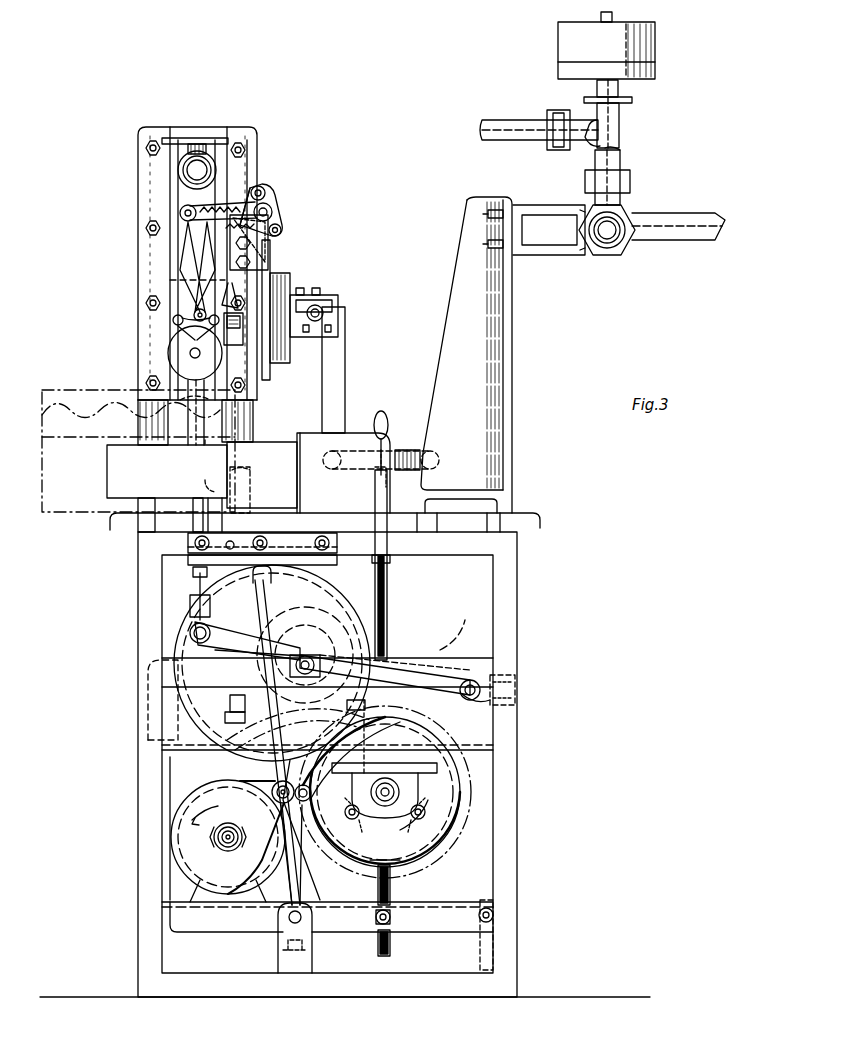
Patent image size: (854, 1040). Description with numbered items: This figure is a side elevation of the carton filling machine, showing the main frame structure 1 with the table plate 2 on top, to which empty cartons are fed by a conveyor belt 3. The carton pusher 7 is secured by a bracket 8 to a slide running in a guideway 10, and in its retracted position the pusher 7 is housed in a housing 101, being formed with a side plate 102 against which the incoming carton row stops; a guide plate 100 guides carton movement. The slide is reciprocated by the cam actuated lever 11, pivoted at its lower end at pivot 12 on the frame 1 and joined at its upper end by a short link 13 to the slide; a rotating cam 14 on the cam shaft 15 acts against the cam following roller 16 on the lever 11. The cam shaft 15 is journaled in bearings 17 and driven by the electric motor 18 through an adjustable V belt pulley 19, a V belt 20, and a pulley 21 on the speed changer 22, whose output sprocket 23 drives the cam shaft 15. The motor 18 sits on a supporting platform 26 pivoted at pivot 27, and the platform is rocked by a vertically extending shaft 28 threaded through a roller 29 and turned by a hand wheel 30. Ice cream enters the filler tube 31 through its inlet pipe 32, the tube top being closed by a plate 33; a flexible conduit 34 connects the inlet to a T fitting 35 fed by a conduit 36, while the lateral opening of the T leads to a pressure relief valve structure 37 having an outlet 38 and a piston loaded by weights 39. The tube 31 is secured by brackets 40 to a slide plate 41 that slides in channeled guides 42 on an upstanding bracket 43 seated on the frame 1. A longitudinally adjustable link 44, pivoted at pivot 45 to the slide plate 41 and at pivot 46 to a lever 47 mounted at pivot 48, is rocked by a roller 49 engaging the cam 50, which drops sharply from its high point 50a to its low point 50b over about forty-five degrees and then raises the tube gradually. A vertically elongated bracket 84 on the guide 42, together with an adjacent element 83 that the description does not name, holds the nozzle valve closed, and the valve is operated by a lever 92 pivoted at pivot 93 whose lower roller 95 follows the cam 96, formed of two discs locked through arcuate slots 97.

The main frame structure 1 is at (505, 610).
The table plate 2 is at (515, 513).
The conveyor belt 3 is at (466, 355).
The carton pusher 7 is at (220, 490).
The bracket 8 is at (252, 480).
The guideway 10 is at (330, 565).
The cam actuated lever 11 is at (255, 600).
The pivot 12 is at (290, 922).
The short link 13 is at (246, 583).
The rotating cam 14 is at (318, 810).
The cam shaft 15 is at (398, 793).
The cam following roller 16 is at (272, 782).
The bearings 17 is at (420, 780).
The electric motor 18 is at (190, 855).
The adjustable V belt pulley 19 is at (178, 832).
The V belt 20 is at (168, 775).
The pulley 21 is at (190, 608).
The speed changer 22 is at (345, 620).
The sprocket 23 is at (380, 655).
The supporting platform 26 is at (222, 930).
The pivot 27 is at (495, 912).
The vertically extending shaft 28 is at (388, 610).
The roller 29 is at (390, 922).
The hand wheel 30 is at (405, 430).
The conduit or nozzle 31 is at (185, 200).
The inlet pipe 32 is at (178, 170).
The plate 33 is at (205, 138).
The flexible conduit 34 is at (212, 170).
The T fitting 35 is at (625, 200).
The conduit 36 is at (675, 220).
The pressure relief valve structure 37 is at (625, 135).
The outlet 38 is at (505, 125).
The weights 39 is at (660, 75).
The brackets 40 is at (195, 385).
The slide plate 41 is at (225, 162).
The channeled guides 42 is at (165, 128).
The upstanding bracket 43 is at (140, 240).
The longitudinally adjustable link 44 is at (185, 445).
The pivot 45 is at (190, 273).
The pivot 46 is at (190, 636).
The lever 47 is at (210, 650).
The pivot 48 is at (475, 703).
The roller 49 is at (465, 680).
The cam 50 is at (470, 772).
The high point 50a is at (457, 628).
The low point 50b is at (280, 722).
The plate 83 is at (262, 243).
The vertically elongated bracket 84 is at (262, 262).
The lever 92 is at (320, 372).
The pivot 93 is at (295, 680).
The roller 95 is at (272, 812).
The cam 96 is at (392, 870).
The arcuate slots 97 is at (458, 845).
The guide plate 100 is at (138, 451).
The housing 101 is at (345, 433).
The side plate 102 is at (268, 448).